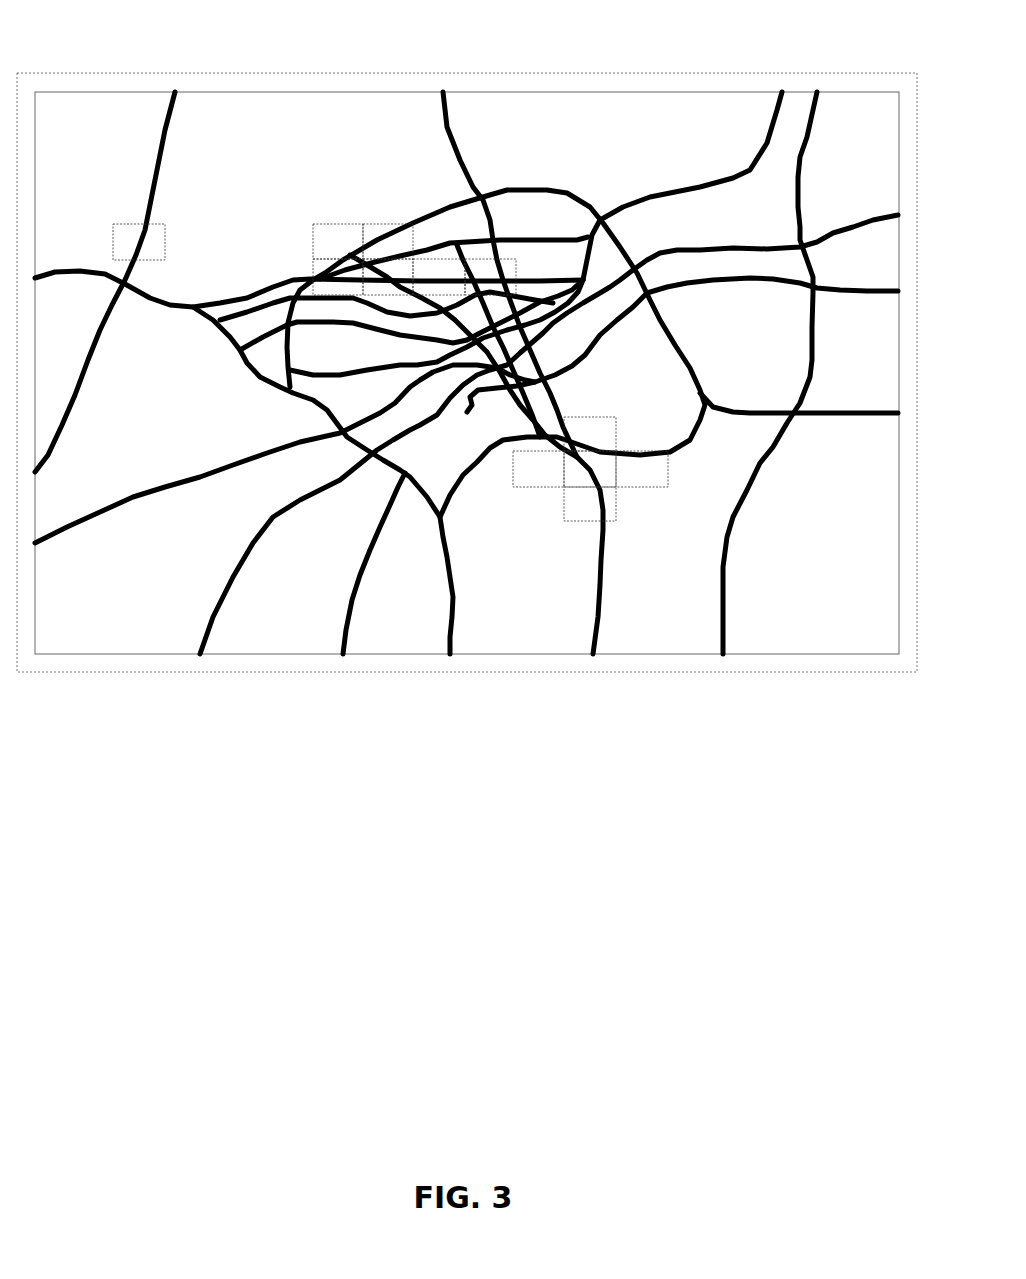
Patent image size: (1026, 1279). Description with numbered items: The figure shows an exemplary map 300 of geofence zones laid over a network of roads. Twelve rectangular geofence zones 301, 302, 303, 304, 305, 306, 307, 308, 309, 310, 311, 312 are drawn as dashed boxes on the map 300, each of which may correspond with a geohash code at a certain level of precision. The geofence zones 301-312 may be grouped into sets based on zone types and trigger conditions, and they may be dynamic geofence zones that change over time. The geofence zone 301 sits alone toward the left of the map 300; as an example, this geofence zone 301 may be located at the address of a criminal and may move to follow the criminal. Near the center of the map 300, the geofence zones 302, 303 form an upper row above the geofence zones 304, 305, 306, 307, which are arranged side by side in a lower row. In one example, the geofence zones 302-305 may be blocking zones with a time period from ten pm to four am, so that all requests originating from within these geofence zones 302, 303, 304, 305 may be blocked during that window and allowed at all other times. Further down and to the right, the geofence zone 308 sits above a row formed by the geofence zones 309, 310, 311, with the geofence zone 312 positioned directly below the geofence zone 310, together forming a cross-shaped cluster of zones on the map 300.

The map 300 is at (331, 36).
The geofence zone 301 is at (124, 253).
The geofence zone 302 is at (323, 253).
The geofence zone 303 is at (373, 253).
The geofence zone 304 is at (323, 289).
The geofence zone 305 is at (373, 289).
The geofence zone 306 is at (424, 289).
The geofence zone 307 is at (475, 289).
The geofence zone 308 is at (575, 446).
The geofence zone 309 is at (523, 481).
The geofence zone 310 is at (575, 481).
The geofence zone 311 is at (627, 481).
The geofence zone 312 is at (575, 516).